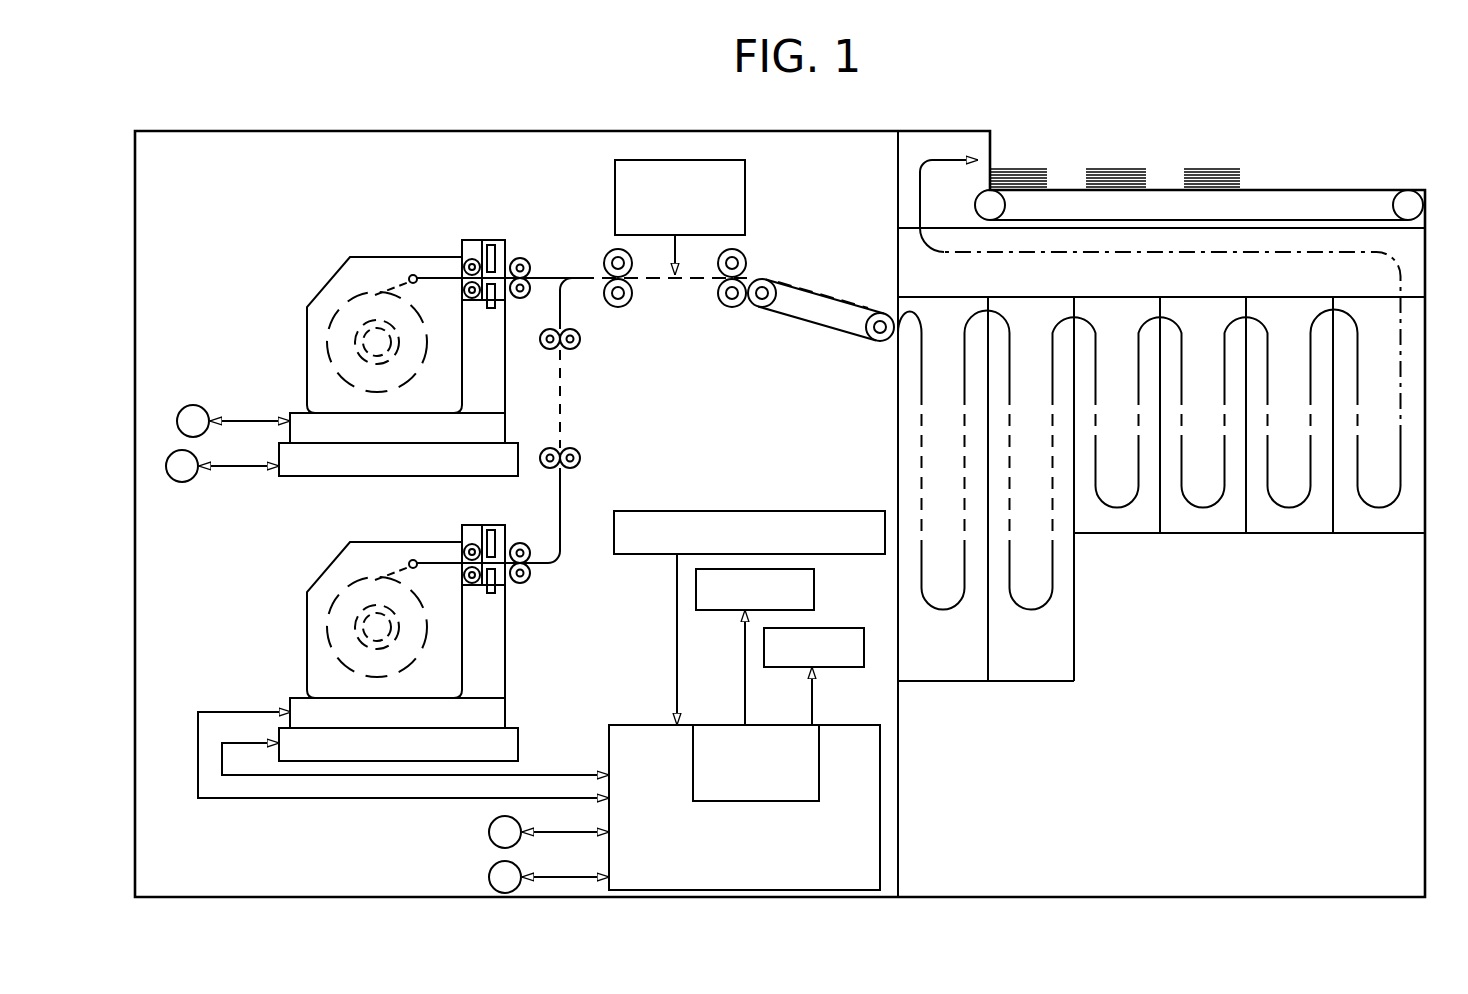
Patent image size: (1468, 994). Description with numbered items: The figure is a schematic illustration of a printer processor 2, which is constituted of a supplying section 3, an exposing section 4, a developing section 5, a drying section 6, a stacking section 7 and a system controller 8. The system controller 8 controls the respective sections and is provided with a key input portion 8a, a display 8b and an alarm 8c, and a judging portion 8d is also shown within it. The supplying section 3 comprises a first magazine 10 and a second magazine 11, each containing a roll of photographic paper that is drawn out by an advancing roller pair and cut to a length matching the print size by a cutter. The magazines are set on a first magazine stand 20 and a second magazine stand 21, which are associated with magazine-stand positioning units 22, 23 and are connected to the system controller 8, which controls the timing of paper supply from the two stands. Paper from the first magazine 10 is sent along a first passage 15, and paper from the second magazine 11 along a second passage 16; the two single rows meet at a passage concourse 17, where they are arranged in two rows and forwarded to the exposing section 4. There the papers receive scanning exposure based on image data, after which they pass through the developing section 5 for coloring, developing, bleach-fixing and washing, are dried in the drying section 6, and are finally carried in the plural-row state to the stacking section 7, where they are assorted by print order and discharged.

The printer processor 2 is at (534, 130).
The supplying section 3 is at (272, 278).
The exposing section 4 is at (638, 158).
The developing section 5 is at (1076, 617).
The drying section 6 is at (896, 265).
The stacking section 7 is at (1068, 150).
The system controller 8 is at (787, 722).
The key input portion 8a is at (677, 511).
The display 8b is at (712, 612).
The alarm 8c is at (855, 628).
The judging portion 8d is at (693, 755).
The first magazine 10 is at (362, 257).
The second magazine 11 is at (418, 596).
The first passage 15 is at (543, 272).
The second passage 16 is at (552, 565).
The passage concourse 17 is at (594, 272).
The first magazine stand 20 is at (290, 413).
The second magazine stand 21 is at (342, 683).
The magazine-stand positioning unit 22 is at (279, 477).
The magazine-stand positioning unit 23 is at (431, 716).